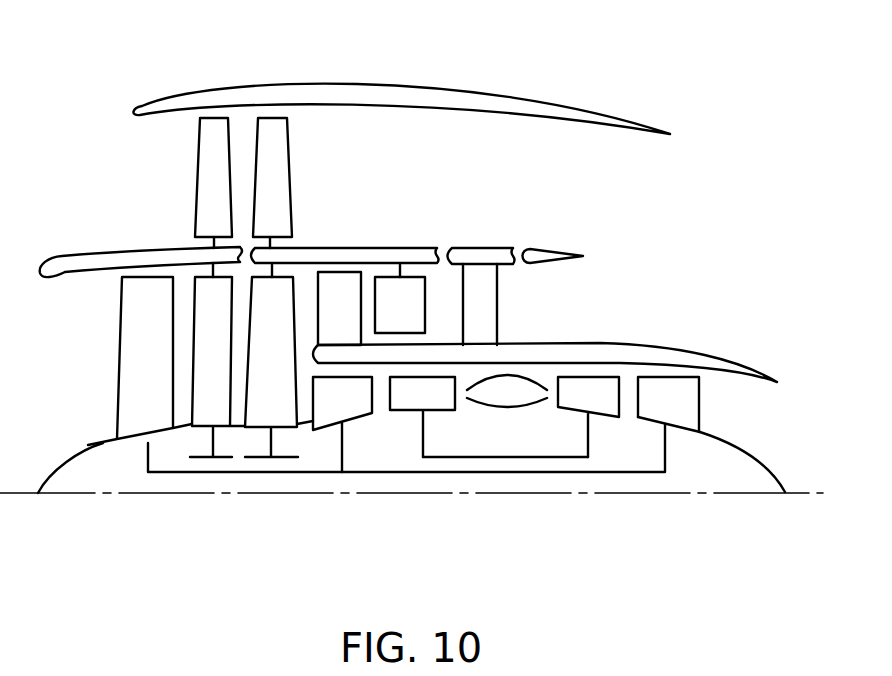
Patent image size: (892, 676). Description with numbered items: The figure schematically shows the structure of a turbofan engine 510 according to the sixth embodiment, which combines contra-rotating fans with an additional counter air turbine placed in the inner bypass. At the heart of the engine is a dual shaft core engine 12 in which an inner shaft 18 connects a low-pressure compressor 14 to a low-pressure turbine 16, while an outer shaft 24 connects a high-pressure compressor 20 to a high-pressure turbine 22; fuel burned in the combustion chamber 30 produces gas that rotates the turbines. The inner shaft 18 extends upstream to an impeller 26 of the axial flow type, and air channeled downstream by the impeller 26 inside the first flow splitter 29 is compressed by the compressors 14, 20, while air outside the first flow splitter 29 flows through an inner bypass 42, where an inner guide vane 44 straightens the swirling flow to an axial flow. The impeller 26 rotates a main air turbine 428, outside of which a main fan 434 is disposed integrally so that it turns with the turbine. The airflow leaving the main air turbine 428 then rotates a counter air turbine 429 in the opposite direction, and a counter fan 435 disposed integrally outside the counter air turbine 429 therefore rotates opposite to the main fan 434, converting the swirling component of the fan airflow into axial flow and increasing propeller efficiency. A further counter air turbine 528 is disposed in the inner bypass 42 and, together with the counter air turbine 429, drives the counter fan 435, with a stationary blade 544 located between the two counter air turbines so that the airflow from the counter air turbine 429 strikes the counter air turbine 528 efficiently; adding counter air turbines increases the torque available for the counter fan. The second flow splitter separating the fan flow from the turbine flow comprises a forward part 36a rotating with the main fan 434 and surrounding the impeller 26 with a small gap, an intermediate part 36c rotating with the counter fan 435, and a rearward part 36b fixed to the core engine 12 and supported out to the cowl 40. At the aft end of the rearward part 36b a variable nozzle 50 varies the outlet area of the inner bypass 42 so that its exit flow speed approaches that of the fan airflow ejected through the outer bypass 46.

The cowl 40 is at (370, 84).
The turbofan engine 510 is at (813, 114).
The core engine 12 is at (728, 328).
The outer bypass 46 is at (441, 155).
The main fan 434 is at (218, 168).
The counter fan 435 is at (285, 180).
The forward part of the second flow splitter 36a is at (117, 256).
The intermediate part of the second flow splitter 36c is at (386, 248).
The rearward part of the second flow splitter 36b is at (503, 248).
The variable nozzle 50 is at (558, 252).
The stationary blade 544 is at (333, 282).
The inner bypass 42 is at (555, 317).
The counter air turbine 528 is at (415, 325).
The inner guide vane 44 is at (490, 297).
The first flow splitter 29 is at (600, 343).
The impeller 26 is at (128, 343).
The main air turbine 428 is at (217, 412).
The counter air turbine 429 is at (277, 410).
The low-pressure compressor 14 is at (353, 417).
The high-pressure compressor 20 is at (435, 410).
The combustion chamber 30 is at (527, 407).
The high-pressure turbine 22 is at (605, 417).
The low-pressure turbine 16 is at (690, 407).
The outer shaft 24 is at (477, 457).
The inner shaft 18 is at (572, 475).